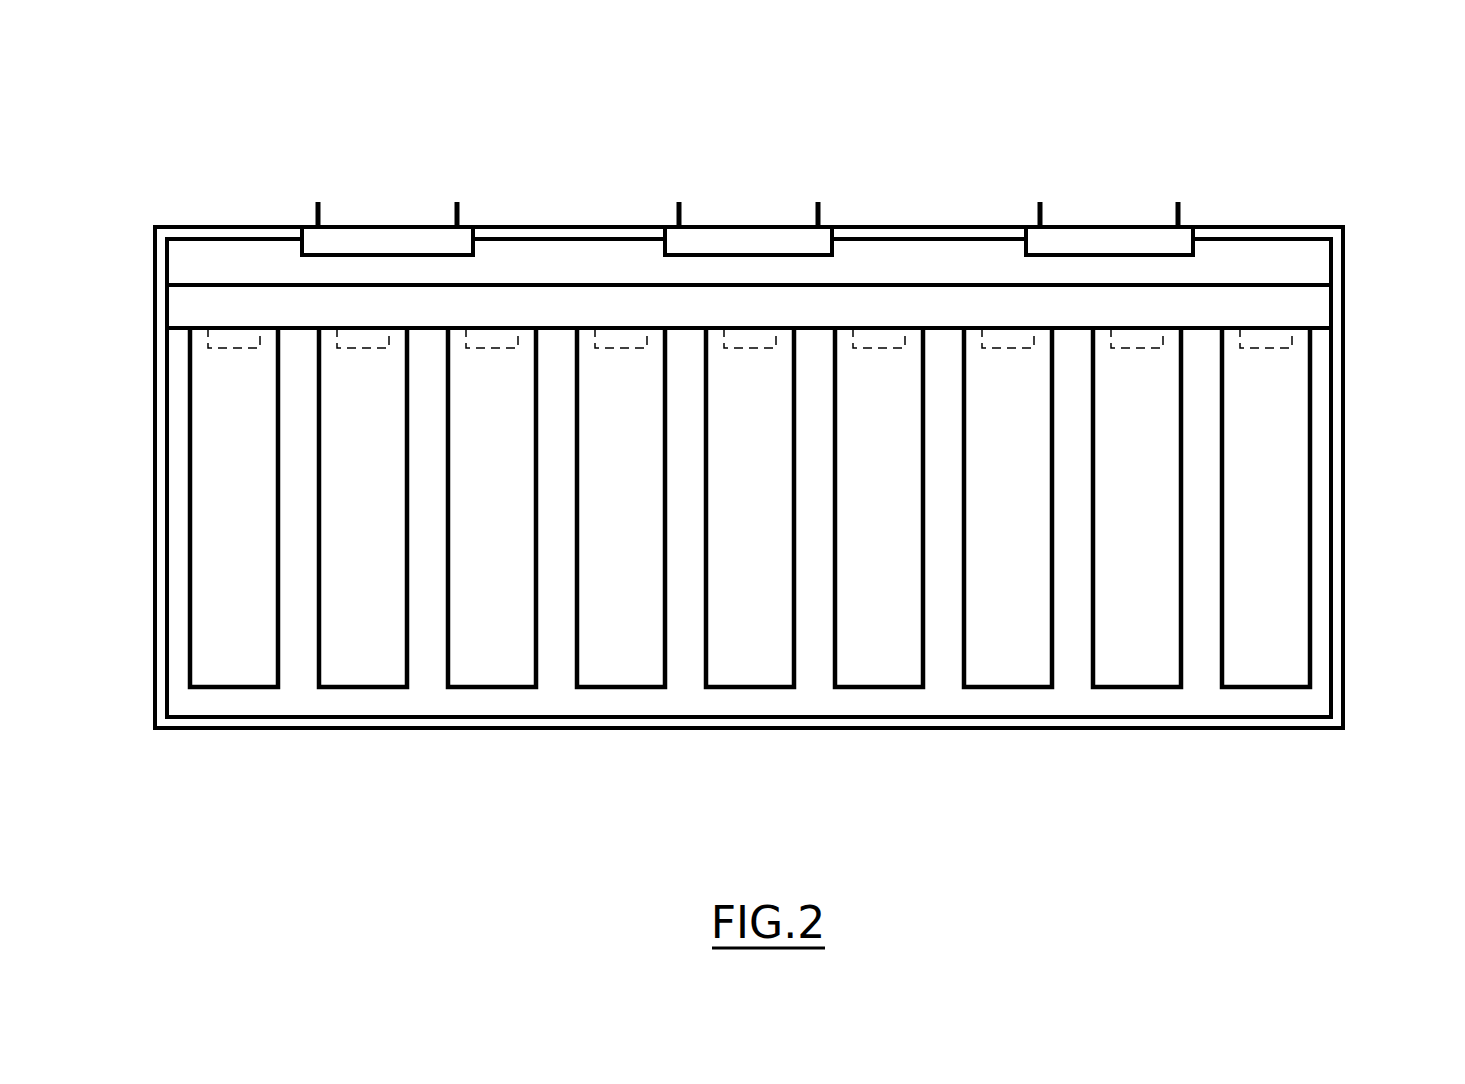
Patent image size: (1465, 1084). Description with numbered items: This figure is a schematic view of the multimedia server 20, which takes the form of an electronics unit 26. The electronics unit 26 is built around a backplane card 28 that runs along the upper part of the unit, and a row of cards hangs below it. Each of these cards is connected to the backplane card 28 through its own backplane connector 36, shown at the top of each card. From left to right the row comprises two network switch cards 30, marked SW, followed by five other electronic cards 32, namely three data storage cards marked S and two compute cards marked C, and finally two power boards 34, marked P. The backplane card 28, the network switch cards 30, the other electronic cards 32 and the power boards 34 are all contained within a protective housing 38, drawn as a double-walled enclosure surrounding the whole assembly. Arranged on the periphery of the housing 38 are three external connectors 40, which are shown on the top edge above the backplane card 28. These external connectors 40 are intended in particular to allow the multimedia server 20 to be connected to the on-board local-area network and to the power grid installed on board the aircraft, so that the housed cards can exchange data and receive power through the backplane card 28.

The multimedia server 20 is at (1407, 153).
The electronics unit 26 is at (1309, 181).
The backplane card 28 is at (1295, 303).
The network switch card 30 is at (226, 655).
The other electronic card 32 is at (503, 672).
The power board 34 is at (1139, 658).
The backplane connector 36 is at (490, 342).
The protective housing 38 is at (218, 234).
The external connectors 40 is at (1085, 243).